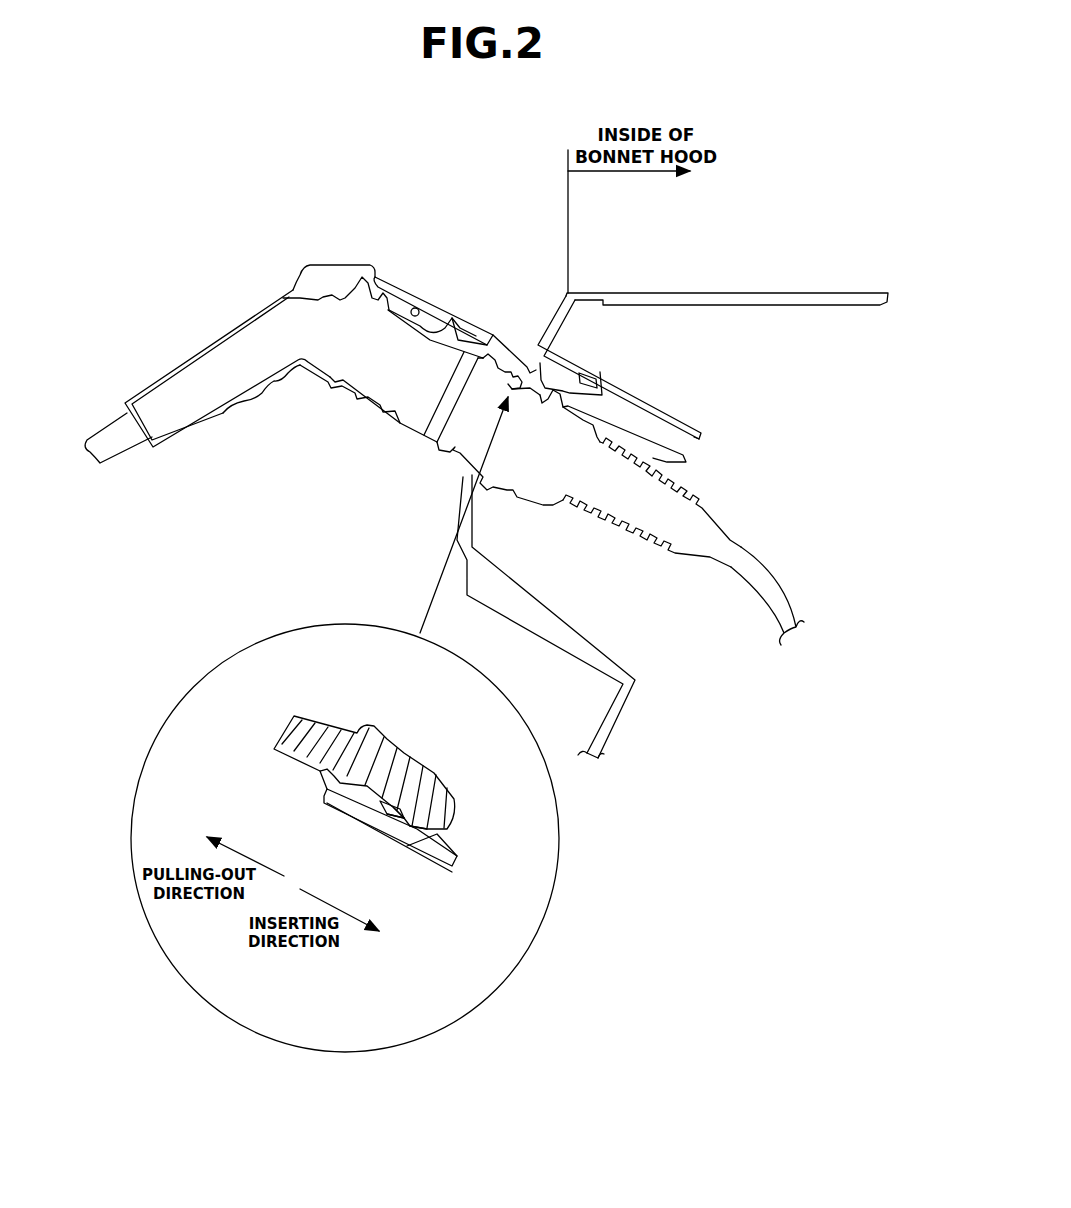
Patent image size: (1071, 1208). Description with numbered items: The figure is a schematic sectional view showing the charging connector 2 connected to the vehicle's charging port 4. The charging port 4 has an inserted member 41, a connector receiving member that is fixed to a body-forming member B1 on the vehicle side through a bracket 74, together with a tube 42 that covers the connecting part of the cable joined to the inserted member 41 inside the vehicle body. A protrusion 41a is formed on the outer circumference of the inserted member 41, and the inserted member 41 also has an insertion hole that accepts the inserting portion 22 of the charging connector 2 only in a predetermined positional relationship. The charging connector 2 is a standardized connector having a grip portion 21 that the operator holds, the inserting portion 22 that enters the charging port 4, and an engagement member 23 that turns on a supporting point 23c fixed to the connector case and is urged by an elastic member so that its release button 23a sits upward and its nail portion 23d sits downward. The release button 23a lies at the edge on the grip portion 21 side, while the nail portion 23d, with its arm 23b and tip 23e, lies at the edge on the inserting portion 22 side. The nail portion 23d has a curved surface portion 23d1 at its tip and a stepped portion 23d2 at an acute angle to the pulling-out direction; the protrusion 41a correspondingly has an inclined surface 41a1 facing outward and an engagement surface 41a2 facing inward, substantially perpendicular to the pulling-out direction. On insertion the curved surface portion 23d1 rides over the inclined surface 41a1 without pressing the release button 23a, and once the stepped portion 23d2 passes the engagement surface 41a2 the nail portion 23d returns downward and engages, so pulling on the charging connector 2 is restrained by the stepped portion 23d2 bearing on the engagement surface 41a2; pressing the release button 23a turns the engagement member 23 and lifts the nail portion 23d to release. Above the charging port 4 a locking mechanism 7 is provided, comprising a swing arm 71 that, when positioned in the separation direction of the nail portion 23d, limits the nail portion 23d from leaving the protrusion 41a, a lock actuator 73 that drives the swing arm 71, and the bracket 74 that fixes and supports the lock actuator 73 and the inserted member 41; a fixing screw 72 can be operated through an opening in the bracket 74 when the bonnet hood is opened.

The charging connector 2 is at (247, 302).
The grip portion 21 is at (267, 388).
The inserting portion 22 is at (445, 424).
The engagement member 23 is at (357, 254).
The release button 23a is at (318, 272).
The arm portion of lock lever 23b is at (452, 333).
The supporting point 23c is at (411, 305).
The nail portion 23d is at (500, 340).
The curved surface portion 23d1 is at (432, 826).
The stepped portion 23d2 is at (385, 787).
The tip of lock lever 23e is at (531, 370).
The charging port 4 is at (450, 488).
The inserted member 41 is at (458, 456).
The protrusion 41a is at (505, 373).
The inclined surface 41a1 is at (327, 776).
The engagement surface 41a2 is at (397, 810).
The tube 42 is at (612, 538).
The locking mechanism 7 is at (652, 392).
The swing arm 71 is at (558, 368).
The fixing screw 72 is at (591, 377).
The lock actuator 73 is at (668, 440).
The bracket 74 is at (695, 422).
The body-forming member B1 is at (764, 291).